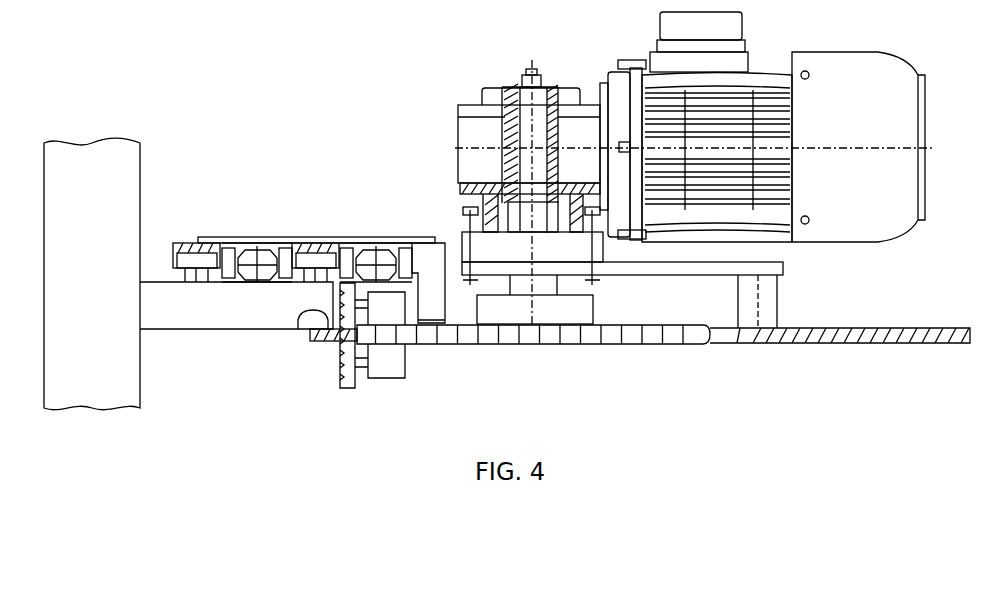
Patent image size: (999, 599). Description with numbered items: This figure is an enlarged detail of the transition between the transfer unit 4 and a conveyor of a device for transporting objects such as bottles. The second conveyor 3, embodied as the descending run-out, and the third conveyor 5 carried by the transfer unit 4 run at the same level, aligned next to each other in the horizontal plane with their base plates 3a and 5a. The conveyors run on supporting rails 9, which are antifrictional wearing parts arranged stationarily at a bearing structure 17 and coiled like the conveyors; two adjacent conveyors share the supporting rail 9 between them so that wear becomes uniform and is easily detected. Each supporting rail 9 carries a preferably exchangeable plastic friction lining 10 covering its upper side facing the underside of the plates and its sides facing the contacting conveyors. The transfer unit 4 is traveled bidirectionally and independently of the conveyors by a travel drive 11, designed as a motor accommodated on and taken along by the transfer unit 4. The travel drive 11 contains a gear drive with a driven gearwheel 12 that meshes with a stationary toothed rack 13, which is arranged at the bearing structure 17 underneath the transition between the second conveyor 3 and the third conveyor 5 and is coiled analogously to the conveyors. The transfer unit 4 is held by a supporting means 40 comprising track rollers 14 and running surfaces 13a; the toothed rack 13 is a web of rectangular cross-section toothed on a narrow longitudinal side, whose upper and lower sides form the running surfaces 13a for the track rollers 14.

The second conveyor 3 is at (262, 250).
The base plates 3a is at (215, 237).
The transfer unit 4 is at (917, 344).
The third conveyor 5 is at (368, 250).
The base plates 5a is at (398, 237).
The supporting rails 9 is at (178, 243).
The friction lining 10 is at (196, 250).
The travel drive 11 is at (890, 48).
The driven gearwheel 12 is at (571, 342).
The toothed rack 13 is at (330, 341).
The running surface 13a is at (300, 327).
The track rollers 14 is at (348, 390).
The bearing structure 17 is at (263, 310).
The supporting means 40 is at (421, 374).